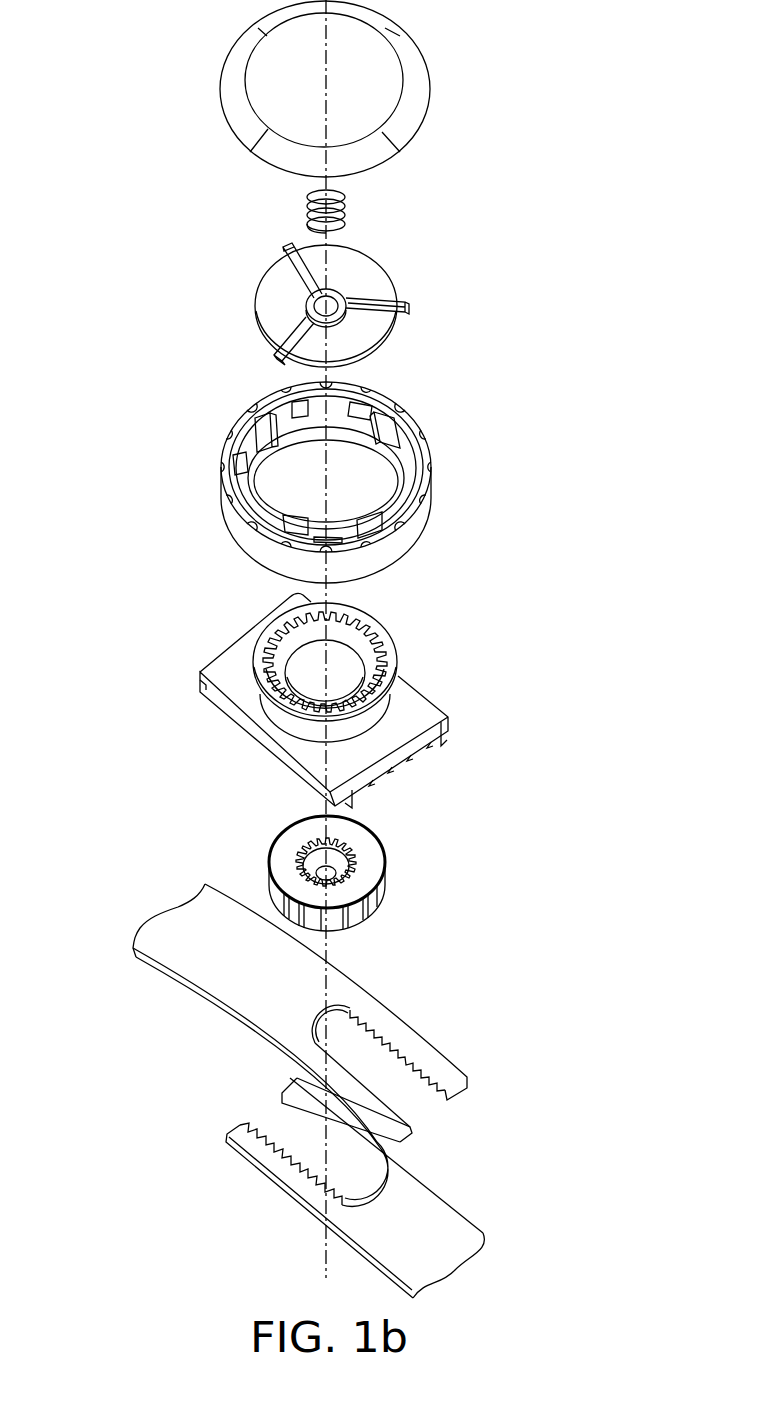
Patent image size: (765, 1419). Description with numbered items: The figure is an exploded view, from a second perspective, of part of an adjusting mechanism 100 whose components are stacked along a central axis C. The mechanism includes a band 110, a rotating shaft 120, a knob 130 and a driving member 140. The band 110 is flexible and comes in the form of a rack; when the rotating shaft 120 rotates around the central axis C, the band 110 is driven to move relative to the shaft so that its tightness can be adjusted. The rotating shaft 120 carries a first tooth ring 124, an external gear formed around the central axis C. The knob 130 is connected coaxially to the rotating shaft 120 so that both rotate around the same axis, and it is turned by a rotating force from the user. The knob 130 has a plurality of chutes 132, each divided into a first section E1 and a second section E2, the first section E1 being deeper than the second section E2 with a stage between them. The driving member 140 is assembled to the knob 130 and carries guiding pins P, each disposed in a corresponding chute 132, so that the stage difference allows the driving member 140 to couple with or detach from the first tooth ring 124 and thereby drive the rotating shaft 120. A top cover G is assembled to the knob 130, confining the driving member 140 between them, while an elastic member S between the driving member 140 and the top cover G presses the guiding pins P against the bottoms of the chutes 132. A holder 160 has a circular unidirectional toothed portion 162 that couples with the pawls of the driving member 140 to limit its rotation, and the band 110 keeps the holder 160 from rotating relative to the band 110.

The adjusting mechanism 100 is at (580, 173).
The top cover G is at (411, 60).
The elastic member S is at (306, 205).
The driving member 140 is at (370, 280).
The guiding pin P is at (408, 308).
The knob 130 is at (357, 461).
The chute 132 is at (348, 390).
The first section E1 is at (292, 392).
The second section E2 is at (371, 390).
The holder 160 is at (362, 688).
The circular unidirectional toothed portion 162 is at (372, 616).
The rotating shaft 120 is at (371, 860).
The first tooth ring 124 is at (346, 853).
The band 110 is at (105, 922).
The central axis C is at (326, 1266).